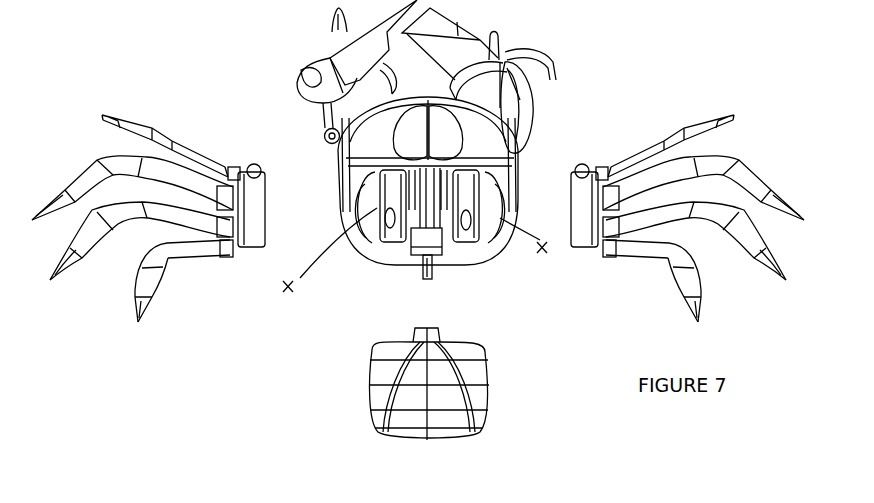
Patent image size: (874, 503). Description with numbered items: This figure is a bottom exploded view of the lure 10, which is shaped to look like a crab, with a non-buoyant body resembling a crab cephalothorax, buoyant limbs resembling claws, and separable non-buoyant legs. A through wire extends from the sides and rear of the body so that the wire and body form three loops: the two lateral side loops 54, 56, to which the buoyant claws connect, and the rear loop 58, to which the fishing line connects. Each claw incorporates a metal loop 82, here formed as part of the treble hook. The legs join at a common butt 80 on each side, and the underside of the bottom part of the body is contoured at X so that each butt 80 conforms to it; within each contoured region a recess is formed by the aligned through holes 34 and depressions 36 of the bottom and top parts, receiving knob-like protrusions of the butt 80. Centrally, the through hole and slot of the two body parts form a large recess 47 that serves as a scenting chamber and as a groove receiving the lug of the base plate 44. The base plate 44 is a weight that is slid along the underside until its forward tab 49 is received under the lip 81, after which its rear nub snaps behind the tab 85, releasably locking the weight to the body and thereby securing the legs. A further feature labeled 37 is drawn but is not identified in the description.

The lure 10 is at (592, 84).
The through holes 34 is at (463, 230).
The depressions 36 is at (466, 206).
The body shell 37 is at (390, 178).
The base plate 44 is at (478, 397).
The recess 47 is at (412, 240).
The tab 49 is at (450, 325).
The side loop 54 is at (322, 134).
The side loop 56 is at (540, 148).
The rear loop 58 is at (430, 272).
The butt 80 is at (252, 248).
The lip 81 is at (518, 168).
The metal loop 82 is at (305, 108).
The tab 85 is at (424, 258).